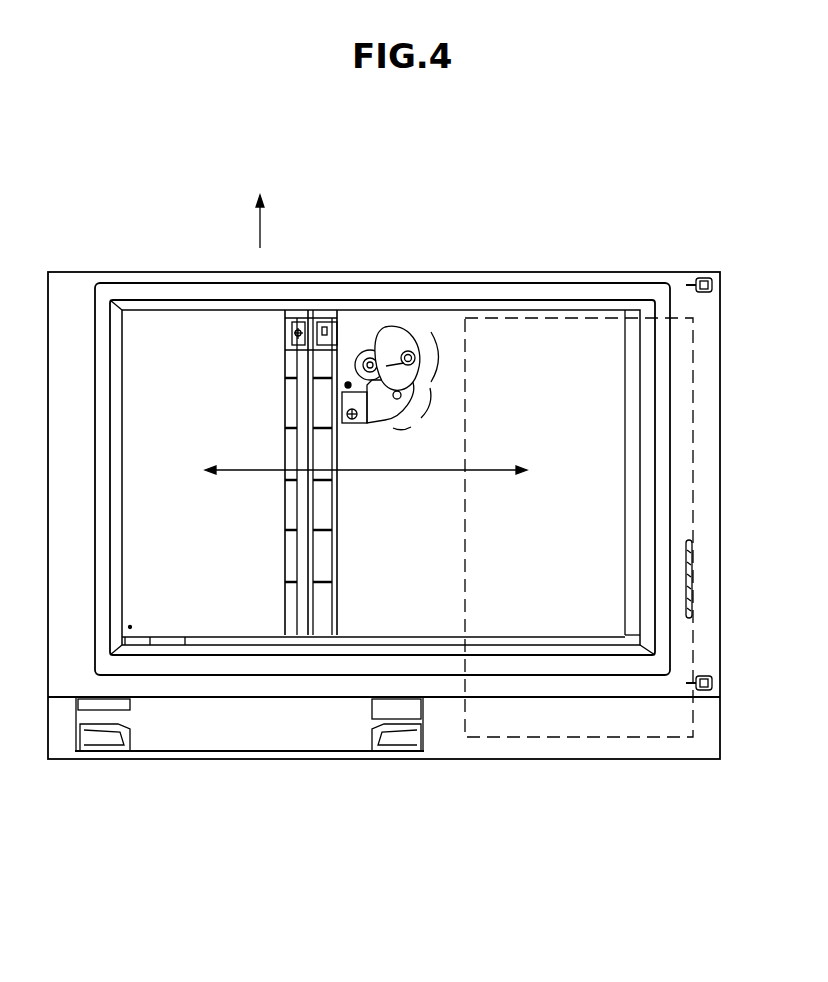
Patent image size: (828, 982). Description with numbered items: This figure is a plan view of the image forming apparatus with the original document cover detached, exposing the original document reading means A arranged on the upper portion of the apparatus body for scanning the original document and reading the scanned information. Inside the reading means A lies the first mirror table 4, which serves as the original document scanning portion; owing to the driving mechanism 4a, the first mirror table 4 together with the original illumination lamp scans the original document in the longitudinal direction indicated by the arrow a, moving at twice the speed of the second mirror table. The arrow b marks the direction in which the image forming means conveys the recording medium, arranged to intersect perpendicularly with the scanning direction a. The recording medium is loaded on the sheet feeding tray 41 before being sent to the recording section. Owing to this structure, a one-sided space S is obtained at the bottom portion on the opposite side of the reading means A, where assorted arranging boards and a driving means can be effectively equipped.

The original document reading means A is at (525, 282).
The first mirror table 4 is at (327, 498).
The driving mechanism 4a is at (390, 328).
The sheet feeding tray 41 is at (260, 755).
The space S is at (543, 740).
The arrow a is at (382, 473).
The arrow b is at (262, 203).